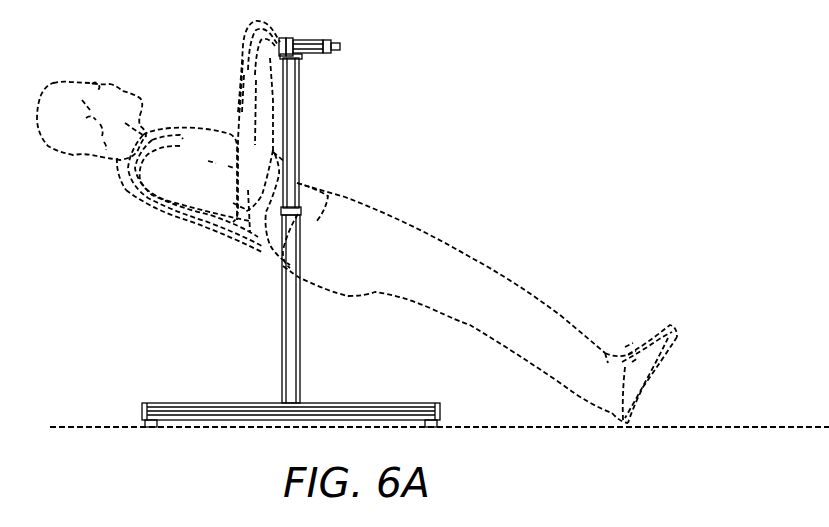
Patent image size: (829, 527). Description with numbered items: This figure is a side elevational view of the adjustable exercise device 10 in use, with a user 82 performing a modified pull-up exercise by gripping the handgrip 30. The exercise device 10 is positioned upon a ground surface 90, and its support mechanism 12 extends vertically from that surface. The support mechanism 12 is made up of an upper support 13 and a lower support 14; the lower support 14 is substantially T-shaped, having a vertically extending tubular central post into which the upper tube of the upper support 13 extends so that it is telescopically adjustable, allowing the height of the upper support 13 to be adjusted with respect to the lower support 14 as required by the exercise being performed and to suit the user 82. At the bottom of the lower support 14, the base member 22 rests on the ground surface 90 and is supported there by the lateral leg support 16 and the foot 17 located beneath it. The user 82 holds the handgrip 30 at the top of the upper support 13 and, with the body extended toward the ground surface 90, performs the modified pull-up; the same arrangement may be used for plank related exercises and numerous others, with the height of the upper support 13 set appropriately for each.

The adjustable exercise device 10 is at (233, 330).
The support mechanism 12 is at (268, 232).
The upper support 13 is at (300, 91).
The lower support 14 is at (301, 340).
The lateral leg support 16 is at (143, 429).
The foot 17 is at (157, 431).
The base member 22 is at (338, 403).
The handgrip 30 is at (318, 40).
The user 82 is at (513, 281).
The ground surface 90 is at (68, 427).